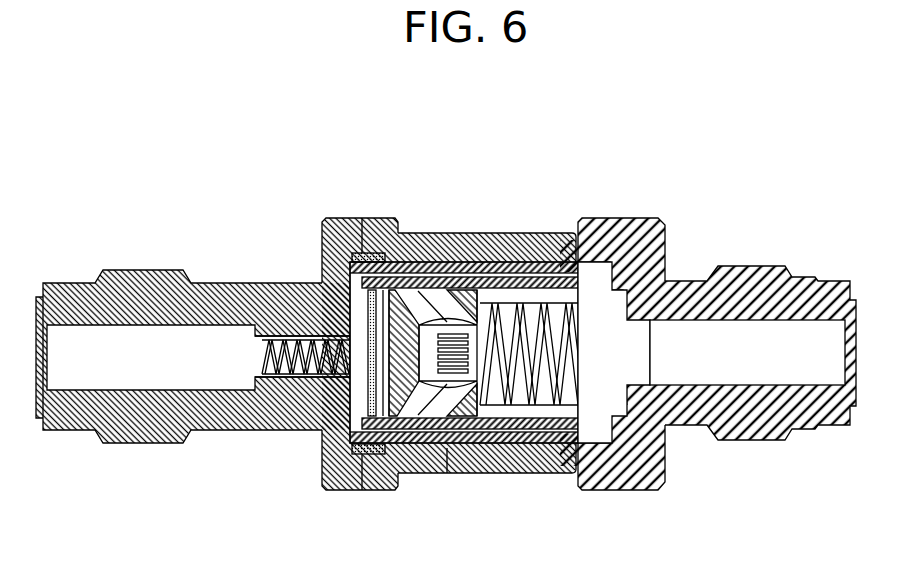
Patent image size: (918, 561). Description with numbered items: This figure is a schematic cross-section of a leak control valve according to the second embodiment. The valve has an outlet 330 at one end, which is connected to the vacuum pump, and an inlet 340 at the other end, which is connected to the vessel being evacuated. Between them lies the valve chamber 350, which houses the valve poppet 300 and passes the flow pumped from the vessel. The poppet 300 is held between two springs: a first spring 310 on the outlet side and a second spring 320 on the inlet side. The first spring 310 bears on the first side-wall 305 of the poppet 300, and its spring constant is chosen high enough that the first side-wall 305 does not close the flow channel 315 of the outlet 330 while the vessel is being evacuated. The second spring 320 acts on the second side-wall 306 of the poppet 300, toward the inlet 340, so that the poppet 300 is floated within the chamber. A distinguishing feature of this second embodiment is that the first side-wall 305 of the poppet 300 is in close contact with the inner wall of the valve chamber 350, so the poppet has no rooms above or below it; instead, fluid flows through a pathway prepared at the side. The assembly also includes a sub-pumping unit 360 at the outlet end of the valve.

The valve poppet 300 is at (522, 234).
The first side-wall 305 is at (365, 491).
The second side-wall 306 is at (450, 473).
The first spring 310 is at (283, 337).
The flow channel 315 is at (300, 383).
The second spring 320 is at (636, 381).
The outlet 330 is at (66, 358).
The inlet 340 is at (773, 334).
The valve chamber 350 is at (637, 255).
The sub-pumping unit 360 is at (441, 250).